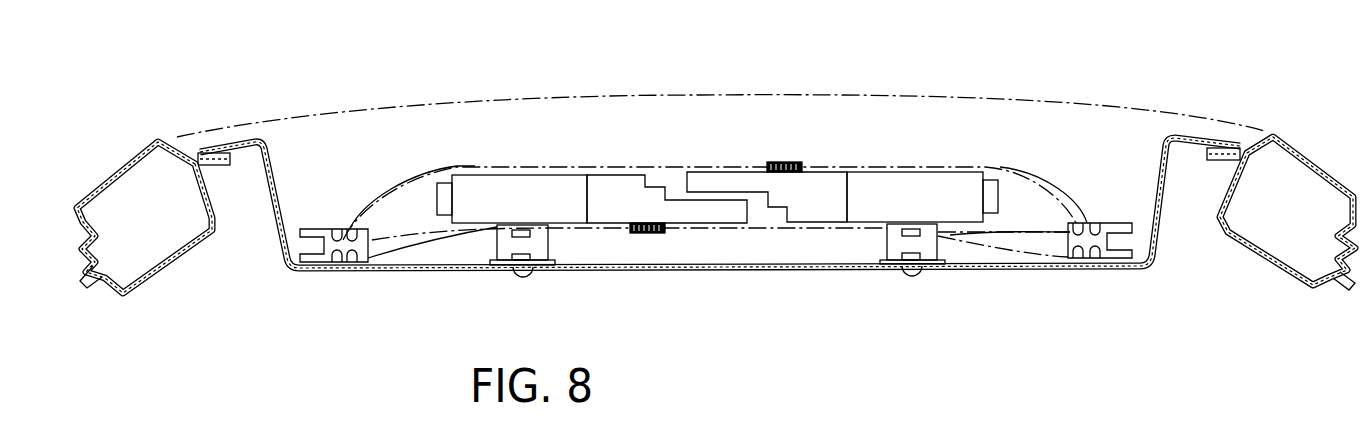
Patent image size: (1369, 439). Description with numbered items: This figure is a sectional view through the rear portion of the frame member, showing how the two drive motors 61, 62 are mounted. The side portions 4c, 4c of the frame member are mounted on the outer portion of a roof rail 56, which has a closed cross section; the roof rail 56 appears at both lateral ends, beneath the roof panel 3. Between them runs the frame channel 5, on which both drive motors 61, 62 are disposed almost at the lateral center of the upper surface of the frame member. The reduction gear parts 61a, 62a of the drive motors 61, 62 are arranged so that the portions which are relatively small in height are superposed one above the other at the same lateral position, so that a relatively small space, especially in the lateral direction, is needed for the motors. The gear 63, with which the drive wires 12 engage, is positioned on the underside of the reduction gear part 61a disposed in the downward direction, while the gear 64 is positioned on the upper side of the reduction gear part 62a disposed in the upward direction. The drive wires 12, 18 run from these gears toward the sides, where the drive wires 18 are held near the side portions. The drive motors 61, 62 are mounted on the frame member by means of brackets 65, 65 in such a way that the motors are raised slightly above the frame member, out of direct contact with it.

The roof panel 3 is at (668, 95).
The side portion 4c is at (241, 148).
The frame channel 5 is at (298, 272).
The drive wire 12 is at (375, 238).
The drive wire 18 is at (337, 207).
The roof rail 56 is at (143, 283).
The drive motor 61 is at (527, 183).
The reduction gear part 61a is at (703, 213).
The drive motor 62 is at (933, 182).
The reduction gear part 62a is at (713, 183).
The gear 63 is at (650, 234).
The gear 64 is at (790, 162).
The bracket 65 is at (550, 243).